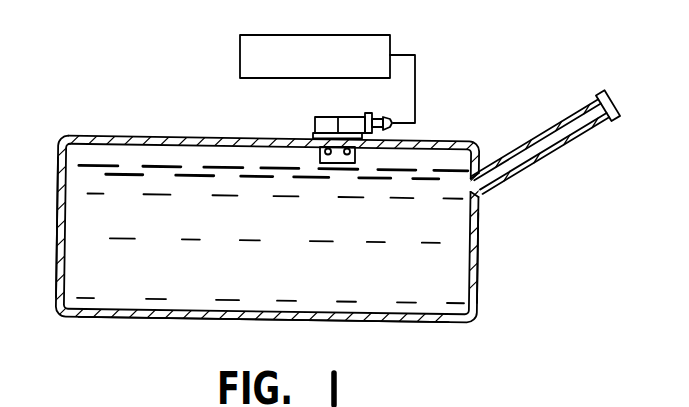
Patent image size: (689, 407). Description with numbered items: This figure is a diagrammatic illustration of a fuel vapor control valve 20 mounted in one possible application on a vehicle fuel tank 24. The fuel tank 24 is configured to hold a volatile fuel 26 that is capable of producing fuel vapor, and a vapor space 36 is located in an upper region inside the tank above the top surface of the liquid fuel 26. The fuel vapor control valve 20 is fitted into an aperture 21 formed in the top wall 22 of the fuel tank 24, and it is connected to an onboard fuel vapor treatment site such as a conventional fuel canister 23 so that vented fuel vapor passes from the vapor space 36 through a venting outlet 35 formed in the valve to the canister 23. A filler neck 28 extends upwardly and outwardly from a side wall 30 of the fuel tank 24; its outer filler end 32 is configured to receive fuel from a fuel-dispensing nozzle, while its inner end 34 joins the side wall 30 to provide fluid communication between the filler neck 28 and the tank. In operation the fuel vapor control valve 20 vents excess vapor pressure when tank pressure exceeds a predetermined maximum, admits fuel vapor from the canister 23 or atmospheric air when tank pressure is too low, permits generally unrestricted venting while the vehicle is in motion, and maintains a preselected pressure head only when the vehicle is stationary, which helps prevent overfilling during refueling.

The fuel vapor control valve 20 is at (303, 117).
The aperture 21 is at (341, 140).
The top wall 22 is at (161, 136).
The fuel canister 23 is at (222, 43).
The fuel tank 24 is at (50, 214).
The volatile fuel 26 is at (122, 285).
The filler neck 28 is at (517, 147).
The side wall 30 is at (479, 273).
The outer filler end 32 is at (600, 92).
The inner end 34 is at (471, 196).
The venting outlet 35 is at (405, 108).
The vapor space 36 is at (236, 150).